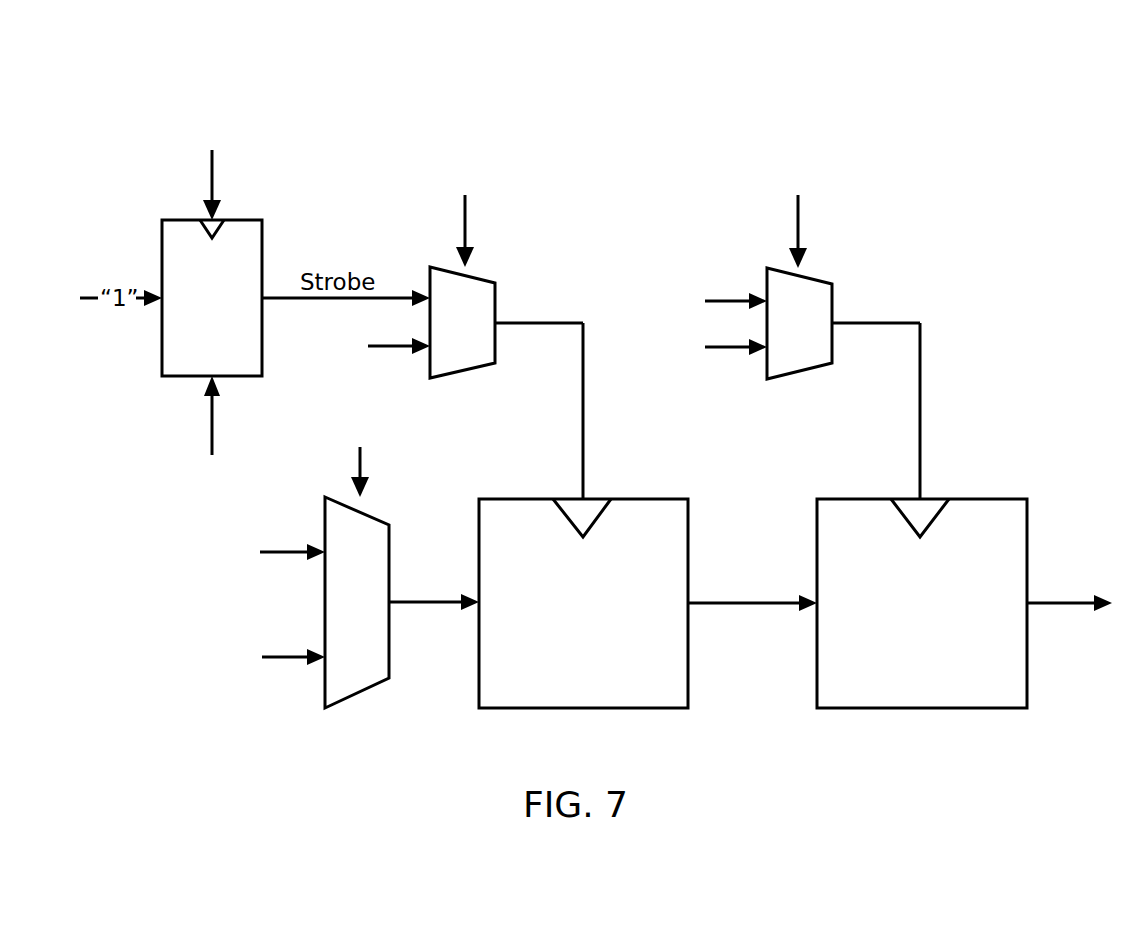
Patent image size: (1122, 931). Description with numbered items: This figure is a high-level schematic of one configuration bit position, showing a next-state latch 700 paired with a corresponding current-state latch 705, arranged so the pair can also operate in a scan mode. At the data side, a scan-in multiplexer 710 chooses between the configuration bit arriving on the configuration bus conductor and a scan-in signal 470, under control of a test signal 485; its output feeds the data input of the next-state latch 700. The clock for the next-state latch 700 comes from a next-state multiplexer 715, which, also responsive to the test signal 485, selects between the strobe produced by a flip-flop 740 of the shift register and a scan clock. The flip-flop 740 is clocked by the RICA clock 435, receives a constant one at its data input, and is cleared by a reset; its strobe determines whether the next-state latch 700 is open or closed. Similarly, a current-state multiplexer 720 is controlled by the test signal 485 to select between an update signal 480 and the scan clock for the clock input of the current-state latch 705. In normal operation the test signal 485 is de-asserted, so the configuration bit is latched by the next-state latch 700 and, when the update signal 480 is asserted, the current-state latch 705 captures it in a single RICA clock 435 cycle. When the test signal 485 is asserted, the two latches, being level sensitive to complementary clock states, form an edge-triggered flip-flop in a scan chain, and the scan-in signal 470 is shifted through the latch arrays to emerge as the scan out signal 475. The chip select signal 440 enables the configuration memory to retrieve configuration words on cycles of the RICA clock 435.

The RICA clock 435 is at (212, 166).
The test signal 485 is at (478, 172).
The flip-flop 740 is at (162, 352).
The chip select (CSN) signal 440 is at (180, 467).
The next-state multiplexer 715 is at (466, 379).
The current-state multiplexer 720 is at (800, 380).
The update signal 480 is at (658, 283).
The next-state latch 700 is at (647, 497).
The current-state latch 705 is at (982, 497).
The scan out signal 475 is at (1061, 601).
The scan-in signal 470 is at (197, 670).
The scan-in multiplexer 710 is at (356, 702).